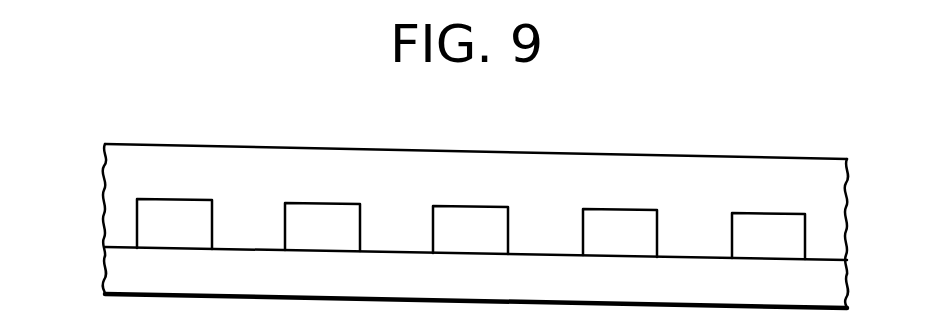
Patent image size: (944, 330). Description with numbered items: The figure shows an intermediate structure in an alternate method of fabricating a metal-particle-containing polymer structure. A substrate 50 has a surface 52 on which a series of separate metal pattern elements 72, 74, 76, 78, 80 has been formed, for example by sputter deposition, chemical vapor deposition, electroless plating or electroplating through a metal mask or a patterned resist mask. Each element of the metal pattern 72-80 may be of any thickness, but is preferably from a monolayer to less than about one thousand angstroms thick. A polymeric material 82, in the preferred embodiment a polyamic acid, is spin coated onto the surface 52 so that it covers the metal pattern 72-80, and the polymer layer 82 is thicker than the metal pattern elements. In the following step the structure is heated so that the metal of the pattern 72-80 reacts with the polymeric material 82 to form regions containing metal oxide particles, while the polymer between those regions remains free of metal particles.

The substrate 50 is at (115, 275).
The surface 52 is at (120, 246).
The metal pattern 72 is at (167, 207).
The metal pattern 74 is at (320, 217).
The metal pattern 76 is at (470, 218).
The metal pattern 78 is at (618, 218).
The metal pattern 80 is at (759, 220).
The polymeric material 82 is at (112, 169).